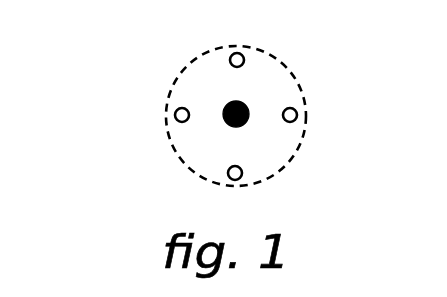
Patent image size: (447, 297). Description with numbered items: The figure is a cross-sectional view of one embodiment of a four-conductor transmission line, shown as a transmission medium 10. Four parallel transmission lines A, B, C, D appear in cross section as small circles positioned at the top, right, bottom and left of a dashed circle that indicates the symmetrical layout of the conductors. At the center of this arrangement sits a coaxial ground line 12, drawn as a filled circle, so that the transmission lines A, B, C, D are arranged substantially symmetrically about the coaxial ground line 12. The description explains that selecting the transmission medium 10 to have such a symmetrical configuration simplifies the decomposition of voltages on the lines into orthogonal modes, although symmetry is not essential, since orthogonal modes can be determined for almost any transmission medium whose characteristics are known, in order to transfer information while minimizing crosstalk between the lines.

The transmission medium 10 is at (190, 59).
The coaxial ground line 12 is at (251, 103).
The transmission line A is at (246, 60).
The transmission line B is at (296, 106).
The transmission line C is at (226, 176).
The transmission line D is at (183, 107).